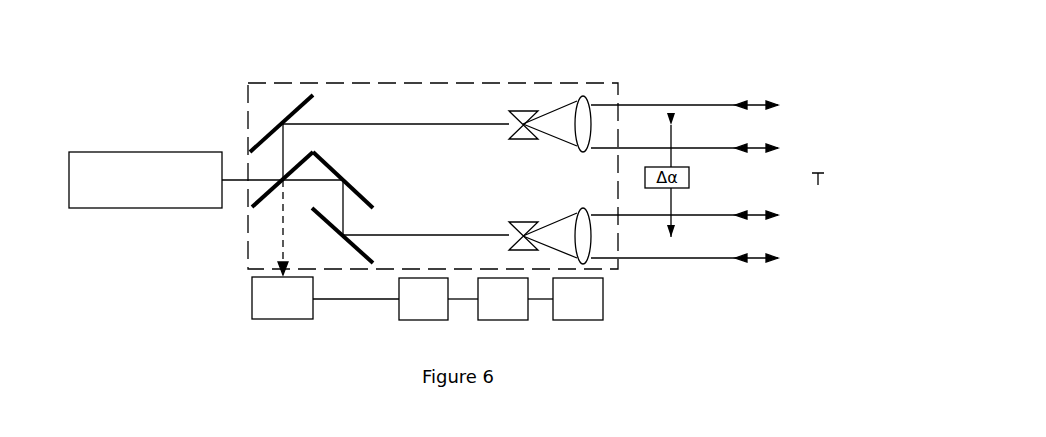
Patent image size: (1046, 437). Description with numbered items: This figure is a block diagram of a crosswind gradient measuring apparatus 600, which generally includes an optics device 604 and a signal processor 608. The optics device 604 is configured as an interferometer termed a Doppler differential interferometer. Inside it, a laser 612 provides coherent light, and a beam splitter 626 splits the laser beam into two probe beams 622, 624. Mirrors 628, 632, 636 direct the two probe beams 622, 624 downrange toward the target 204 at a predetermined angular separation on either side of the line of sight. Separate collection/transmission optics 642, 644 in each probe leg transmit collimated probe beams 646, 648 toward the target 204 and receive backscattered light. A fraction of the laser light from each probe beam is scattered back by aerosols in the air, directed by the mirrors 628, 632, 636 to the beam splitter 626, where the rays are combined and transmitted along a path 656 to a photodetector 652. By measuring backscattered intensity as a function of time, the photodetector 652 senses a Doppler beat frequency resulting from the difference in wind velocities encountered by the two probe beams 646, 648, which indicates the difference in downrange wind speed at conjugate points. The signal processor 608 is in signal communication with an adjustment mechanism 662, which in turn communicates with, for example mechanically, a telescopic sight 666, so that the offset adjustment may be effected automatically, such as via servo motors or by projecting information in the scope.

The crosswind gradient measuring apparatus 600 is at (579, 61).
The optics device 604 is at (433, 176).
The laser 612 is at (145, 180).
The beam splitter 626 is at (282, 181).
The mirror 628 is at (264, 141).
The mirror 632 is at (363, 194).
The mirror 636 is at (357, 250).
The probe beam 622 is at (363, 124).
The probe beam 624 is at (403, 237).
The collection/transmission optics 642 is at (573, 146).
The collection/transmission optics 644 is at (572, 217).
The collimated probe beam 646 is at (691, 126).
The collimated probe beam 648 is at (691, 237).
The target 204 is at (814, 172).
The path 656 is at (282, 224).
The photodetector 652 is at (282, 298).
The signal processing device 608 is at (380, 299).
The adjustment mechanism 662 is at (488, 299).
The telescopic sight 666 is at (565, 299).